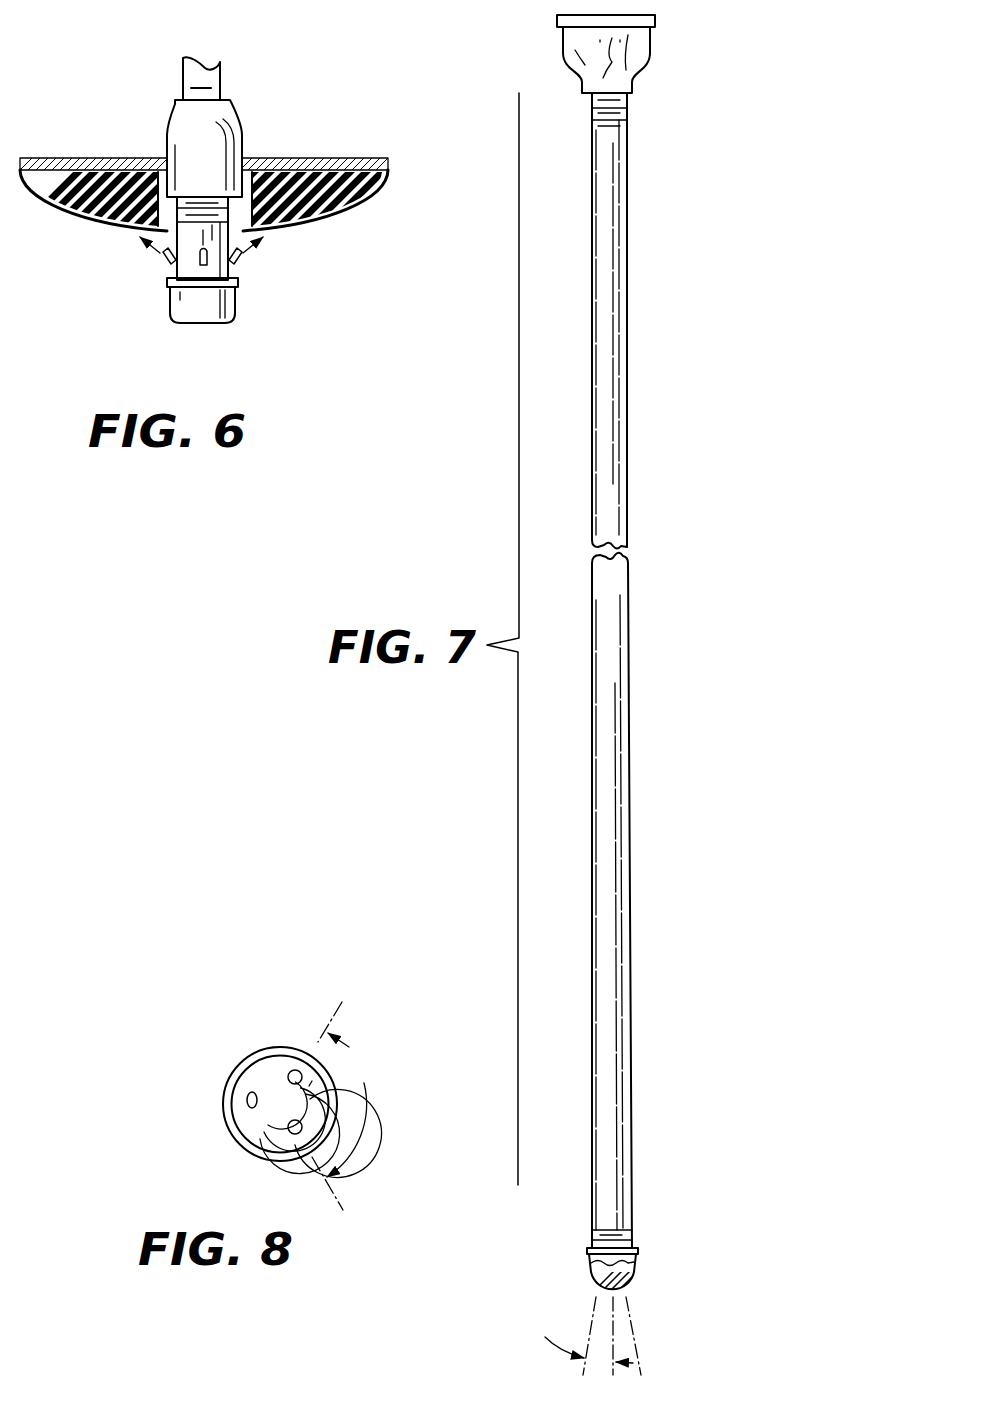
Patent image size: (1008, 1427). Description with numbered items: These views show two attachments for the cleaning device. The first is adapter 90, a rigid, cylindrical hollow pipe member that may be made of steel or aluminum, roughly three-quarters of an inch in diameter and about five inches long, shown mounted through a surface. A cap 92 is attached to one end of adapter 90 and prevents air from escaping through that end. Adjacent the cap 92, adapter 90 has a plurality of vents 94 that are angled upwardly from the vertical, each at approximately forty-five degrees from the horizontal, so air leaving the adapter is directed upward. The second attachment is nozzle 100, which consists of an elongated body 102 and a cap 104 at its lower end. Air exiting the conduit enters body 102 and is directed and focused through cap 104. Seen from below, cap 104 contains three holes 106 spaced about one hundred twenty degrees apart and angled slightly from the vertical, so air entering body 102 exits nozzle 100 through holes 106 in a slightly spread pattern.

In FIG. 6, the adapter 90 is at (240, 268).
In FIG. 6, the cap 92 is at (209, 311).
In FIG. 6, the vents 94 is at (166, 265).
In FIG. 7, the nozzle 100 is at (638, 695).
In FIG. 7, the body 102 is at (618, 488).
In FIG. 7, the cap 104 is at (634, 1266).
In FIG. 8, the cap 104 is at (283, 1046).
In FIG. 8, the holes 106 is at (291, 1135).